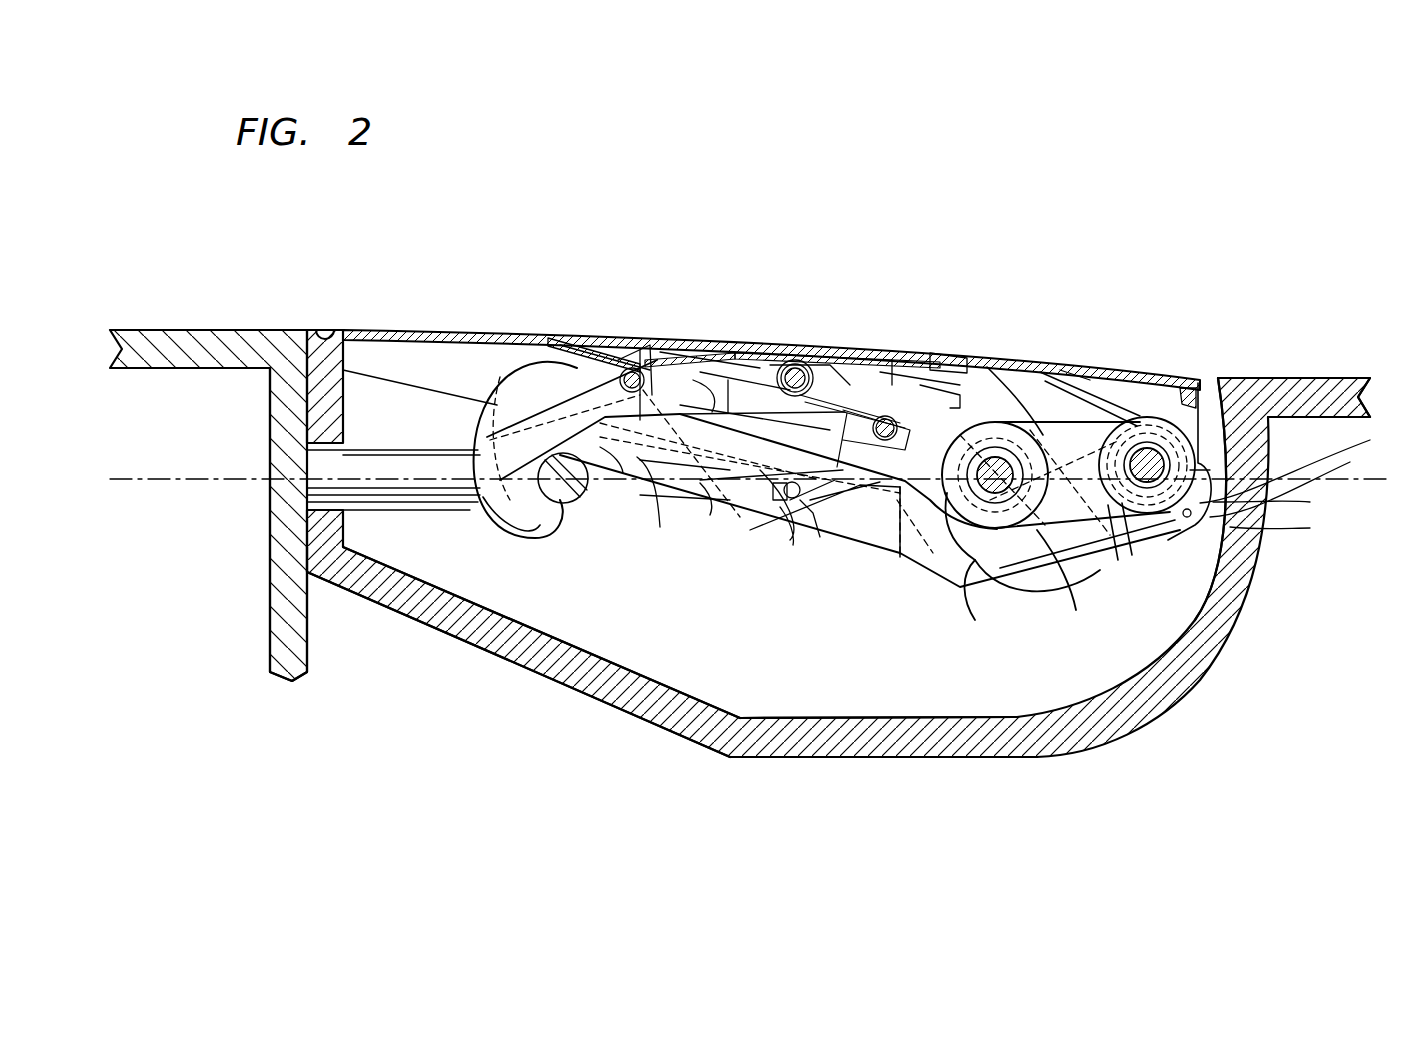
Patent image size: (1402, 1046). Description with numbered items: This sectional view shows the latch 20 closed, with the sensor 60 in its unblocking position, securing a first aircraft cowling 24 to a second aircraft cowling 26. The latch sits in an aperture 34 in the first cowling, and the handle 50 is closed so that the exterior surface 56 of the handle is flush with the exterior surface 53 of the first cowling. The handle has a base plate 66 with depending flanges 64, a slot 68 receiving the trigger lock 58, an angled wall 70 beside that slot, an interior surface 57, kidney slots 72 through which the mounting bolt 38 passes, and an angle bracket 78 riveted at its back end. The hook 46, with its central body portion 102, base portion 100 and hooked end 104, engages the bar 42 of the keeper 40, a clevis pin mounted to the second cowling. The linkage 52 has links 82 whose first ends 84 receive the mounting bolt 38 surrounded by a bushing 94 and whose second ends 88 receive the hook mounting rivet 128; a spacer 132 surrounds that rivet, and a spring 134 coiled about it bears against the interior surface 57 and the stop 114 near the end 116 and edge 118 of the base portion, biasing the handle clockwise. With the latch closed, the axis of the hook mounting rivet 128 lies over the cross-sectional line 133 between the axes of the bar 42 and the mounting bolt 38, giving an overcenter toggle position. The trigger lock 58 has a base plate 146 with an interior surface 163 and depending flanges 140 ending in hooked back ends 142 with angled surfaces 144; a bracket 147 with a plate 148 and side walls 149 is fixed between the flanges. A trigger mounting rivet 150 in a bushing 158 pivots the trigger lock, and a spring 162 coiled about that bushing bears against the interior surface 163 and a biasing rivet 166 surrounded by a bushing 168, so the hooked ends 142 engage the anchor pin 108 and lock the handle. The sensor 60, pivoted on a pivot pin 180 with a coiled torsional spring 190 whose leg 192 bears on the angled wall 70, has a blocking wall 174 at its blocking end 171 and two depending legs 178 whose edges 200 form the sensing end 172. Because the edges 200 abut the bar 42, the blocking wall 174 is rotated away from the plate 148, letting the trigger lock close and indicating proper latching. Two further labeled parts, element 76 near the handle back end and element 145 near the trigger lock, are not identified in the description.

The latch 20 is at (1016, 612).
The first aircraft cowling 24 is at (880, 758).
The second aircraft cowling 26 is at (222, 330).
The aperture 34 is at (700, 706).
The mounting bolt 38 is at (942, 555).
The keeper 40 is at (385, 555).
The bar 42 is at (585, 498).
The hook 46 is at (655, 482).
The handle 50 is at (414, 330).
The linkage 52 is at (1132, 553).
The exterior surface of the first cowling 53 is at (324, 330).
The exterior surface of the handle 56 is at (548, 338).
The interior surface of the handle 57 is at (1048, 380).
The trigger lock 58 is at (790, 356).
The sensor 60 is at (430, 512).
The flanges 64 is at (900, 560).
The base plate 66 is at (1075, 370).
The slot 68 is at (850, 352).
The angled wall 70 is at (630, 385).
The kidney slot 72 is at (1080, 568).
The end wall 76 is at (1215, 388).
The angle bracket 78 is at (1190, 388).
The links 82 is at (1043, 433).
The first end 84 is at (948, 476).
The second end 88 is at (1297, 464).
The bushing 94 is at (963, 597).
The base portion 100 is at (1078, 595).
The central body portion 102 is at (700, 482).
The hooked end 104 is at (530, 526).
The anchor pin 108 is at (810, 497).
The stop 114 is at (1285, 502).
The end of the base portion 116 is at (1294, 527).
The edge 118 is at (1305, 482).
The hook mounting rivet 128 is at (1272, 430).
The spacer 132 is at (1262, 548).
The cross-sectional line 133 is at (190, 480).
The spring 134 is at (1105, 380).
The depending flanges 140 is at (843, 428).
The hooked back ends 142 is at (800, 507).
The angled surfaces 144 is at (790, 537).
The spring leg 145 is at (920, 358).
The base plate 146 is at (715, 352).
The bracket 147 is at (668, 347).
The plate 148 is at (702, 352).
The side walls 149 is at (840, 412).
The trigger mounting rivet 150 is at (812, 362).
The bushing 158 is at (762, 352).
The spring 162 is at (890, 356).
The interior surface 163 is at (895, 357).
The biasing rivet 166 is at (945, 372).
The bushing 168 is at (900, 440).
The blocking end 171 is at (733, 416).
The sensing end 172 is at (560, 530).
The blocking wall 174 is at (716, 392).
The depending legs 178 is at (480, 440).
The pivot pin 180 is at (650, 350).
The coiled torsional spring 190 is at (640, 394).
The leg 192 is at (585, 345).
The edge 200 is at (650, 453).